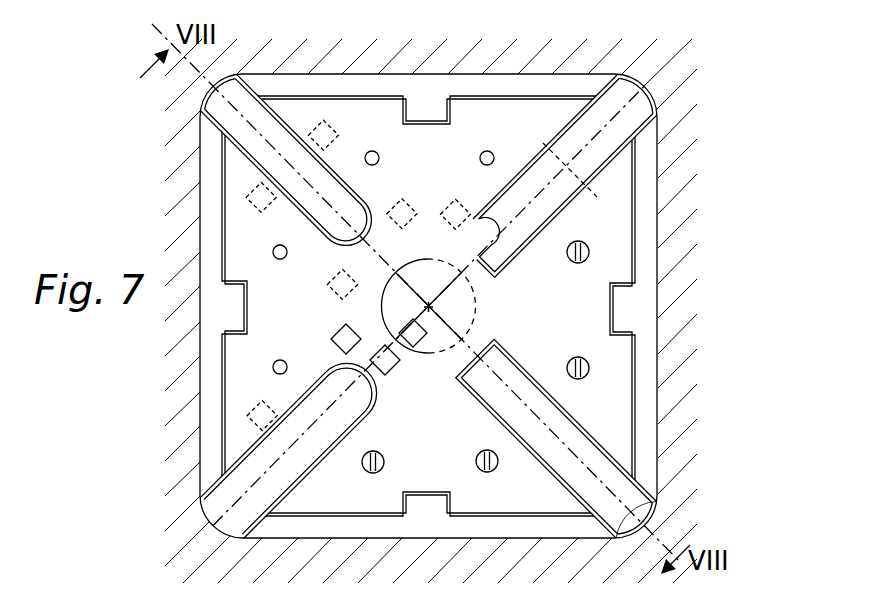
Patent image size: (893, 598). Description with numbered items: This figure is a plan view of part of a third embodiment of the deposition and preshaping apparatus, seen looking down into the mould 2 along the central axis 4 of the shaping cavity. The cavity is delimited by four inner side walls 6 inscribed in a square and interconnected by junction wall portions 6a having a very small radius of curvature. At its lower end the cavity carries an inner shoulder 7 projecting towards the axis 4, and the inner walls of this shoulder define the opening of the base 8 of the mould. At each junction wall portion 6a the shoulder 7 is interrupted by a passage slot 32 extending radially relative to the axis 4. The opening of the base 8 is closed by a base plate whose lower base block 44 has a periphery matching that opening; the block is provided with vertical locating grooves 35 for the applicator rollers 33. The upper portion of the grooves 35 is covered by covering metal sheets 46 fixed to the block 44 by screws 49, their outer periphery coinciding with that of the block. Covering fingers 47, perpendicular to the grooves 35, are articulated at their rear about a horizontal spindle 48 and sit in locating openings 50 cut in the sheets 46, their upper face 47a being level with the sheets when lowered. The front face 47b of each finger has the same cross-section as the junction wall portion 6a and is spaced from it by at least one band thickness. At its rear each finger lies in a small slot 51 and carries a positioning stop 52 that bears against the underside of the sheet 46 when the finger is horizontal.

The mould 2 is at (476, 60).
The central axis 4 is at (430, 307).
The inner side walls 6 is at (560, 70).
The junction wall portions 6a is at (665, 92).
The inner shoulder 7 is at (488, 528).
The base 8 is at (636, 214).
The passage slots 32 is at (212, 118).
The applicator rollers 33 is at (250, 108).
The locating grooves 35 is at (315, 245).
The base block 44 is at (440, 181).
The covering metal sheets 46 is at (582, 315).
The covering fingers 47 is at (600, 166).
The upper face of covering finger 47a is at (570, 428).
The front face of covering finger 47b is at (656, 514).
The horizontal spindle 48 is at (398, 380).
The screws 49 is at (573, 362).
The locating openings 50 is at (471, 400).
The small slot 51 is at (396, 366).
The positioning stop 52 is at (412, 330).